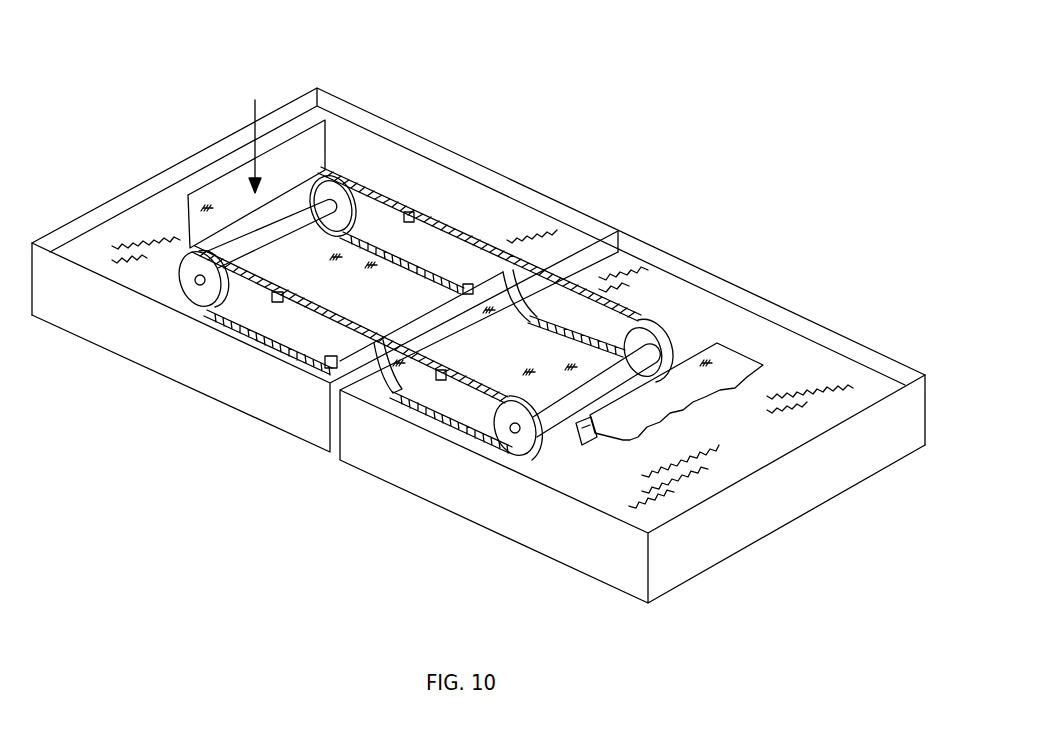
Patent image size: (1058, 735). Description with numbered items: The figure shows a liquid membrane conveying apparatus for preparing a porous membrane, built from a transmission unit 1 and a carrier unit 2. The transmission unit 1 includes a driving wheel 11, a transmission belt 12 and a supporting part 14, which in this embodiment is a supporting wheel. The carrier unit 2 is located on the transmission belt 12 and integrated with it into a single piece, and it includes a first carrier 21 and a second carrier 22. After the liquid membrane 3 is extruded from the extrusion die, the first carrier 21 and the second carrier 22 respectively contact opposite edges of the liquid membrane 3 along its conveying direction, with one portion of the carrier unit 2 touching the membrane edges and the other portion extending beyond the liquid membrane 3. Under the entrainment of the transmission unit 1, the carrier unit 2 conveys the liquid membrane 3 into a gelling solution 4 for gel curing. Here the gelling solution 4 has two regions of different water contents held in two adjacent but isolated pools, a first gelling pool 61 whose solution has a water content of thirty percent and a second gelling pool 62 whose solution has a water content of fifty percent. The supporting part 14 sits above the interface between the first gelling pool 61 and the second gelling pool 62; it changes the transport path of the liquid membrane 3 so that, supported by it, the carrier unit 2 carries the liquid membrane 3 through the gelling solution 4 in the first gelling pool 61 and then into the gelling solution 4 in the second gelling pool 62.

The transmission unit 1 is at (613, 192).
The carrier unit 2 is at (520, 78).
The liquid membrane 3 is at (236, 196).
The gelling solution 4 is at (793, 383).
The driving wheel 11 is at (180, 268).
The transmission belt 12 is at (548, 302).
The supporting part 14 is at (327, 363).
The first carrier 21 is at (265, 272).
The second carrier 22 is at (441, 216).
The first gelling pool 61 is at (193, 358).
The second gelling pool 62 is at (470, 487).